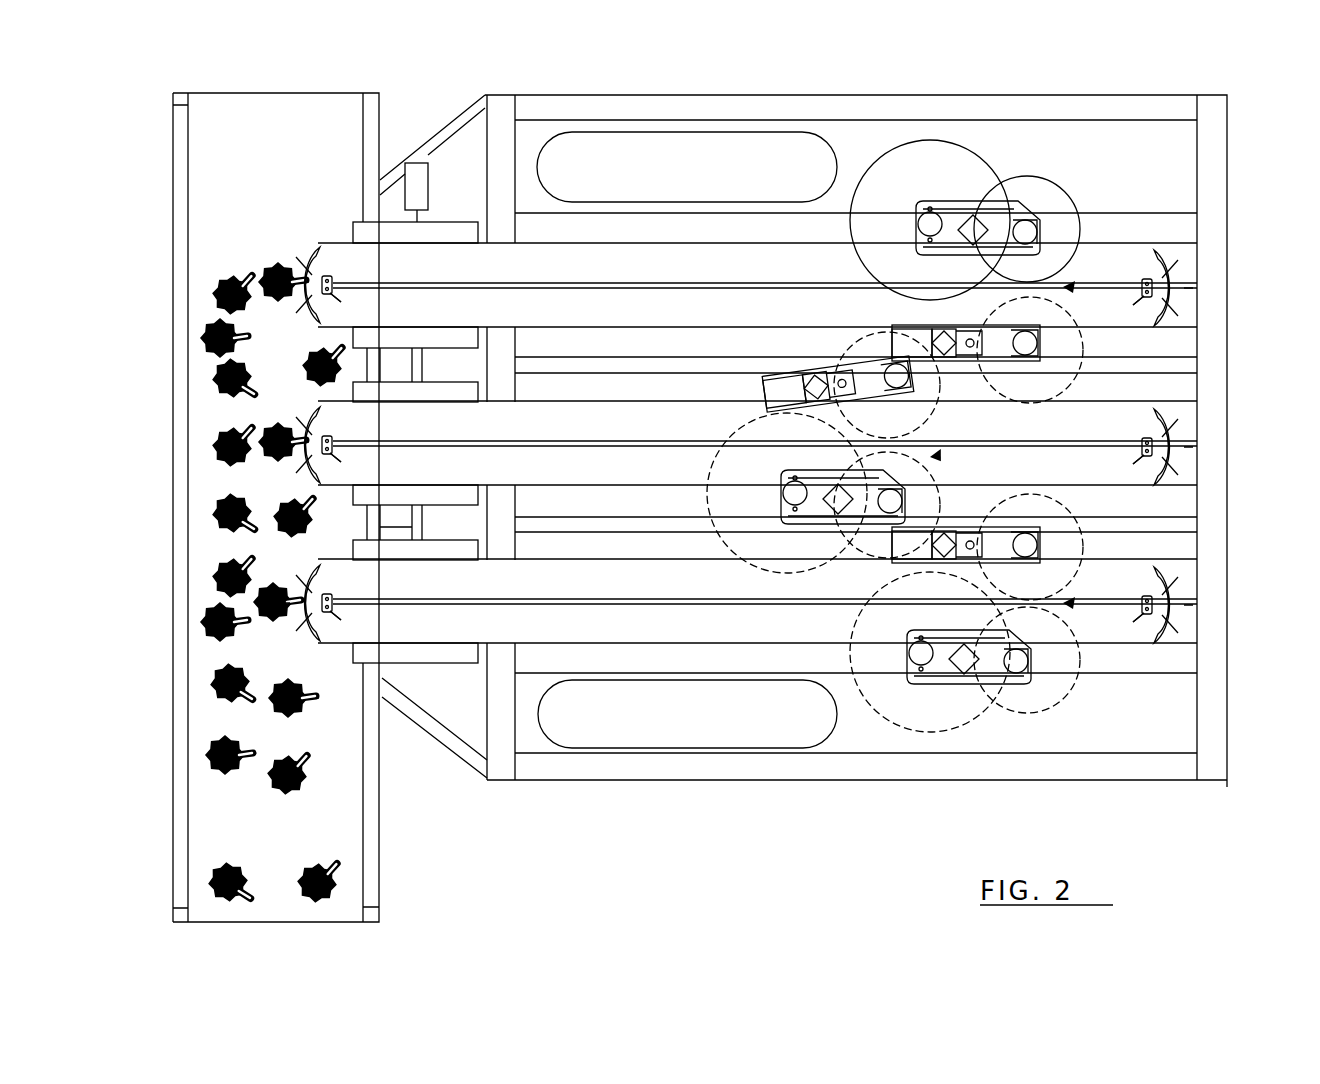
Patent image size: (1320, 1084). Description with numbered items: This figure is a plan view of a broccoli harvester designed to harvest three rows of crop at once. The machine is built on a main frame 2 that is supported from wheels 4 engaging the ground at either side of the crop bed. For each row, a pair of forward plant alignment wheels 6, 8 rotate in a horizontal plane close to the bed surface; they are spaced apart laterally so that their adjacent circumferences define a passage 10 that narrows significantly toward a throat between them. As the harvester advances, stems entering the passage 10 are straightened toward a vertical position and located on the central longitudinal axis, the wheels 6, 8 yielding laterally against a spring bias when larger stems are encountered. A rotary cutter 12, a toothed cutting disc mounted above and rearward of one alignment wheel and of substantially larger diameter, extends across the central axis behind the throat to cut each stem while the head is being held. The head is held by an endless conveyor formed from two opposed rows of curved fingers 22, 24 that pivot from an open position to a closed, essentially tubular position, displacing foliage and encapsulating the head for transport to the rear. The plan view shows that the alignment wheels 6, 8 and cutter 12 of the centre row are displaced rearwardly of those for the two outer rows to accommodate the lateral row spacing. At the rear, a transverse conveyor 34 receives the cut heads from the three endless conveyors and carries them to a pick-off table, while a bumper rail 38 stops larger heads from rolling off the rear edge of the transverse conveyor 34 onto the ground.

The main frame 2 is at (917, 760).
The wheels 4 is at (660, 157).
The forward plant alignment wheel 6 is at (1042, 192).
The forward plant alignment wheel 8 is at (1066, 350).
The passage 10 is at (1070, 282).
The rotary cutter 12 is at (962, 173).
The curved fingers 22 is at (298, 246).
The curved fingers 24 is at (289, 328).
The transverse conveyor 34 is at (335, 837).
The bumper rail 38 is at (182, 770).